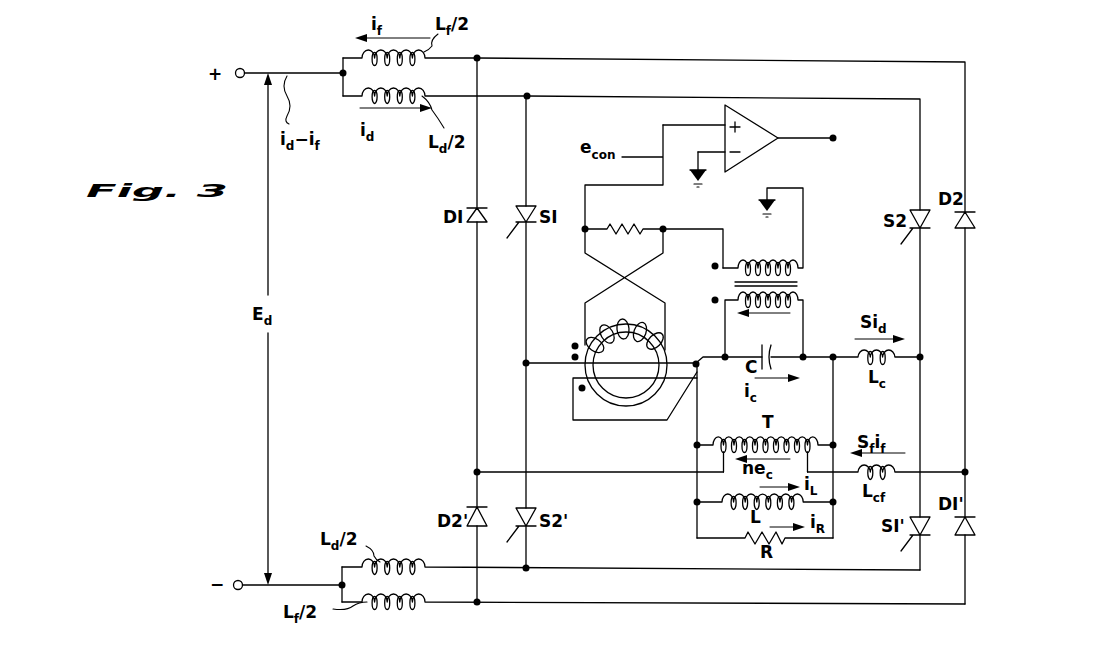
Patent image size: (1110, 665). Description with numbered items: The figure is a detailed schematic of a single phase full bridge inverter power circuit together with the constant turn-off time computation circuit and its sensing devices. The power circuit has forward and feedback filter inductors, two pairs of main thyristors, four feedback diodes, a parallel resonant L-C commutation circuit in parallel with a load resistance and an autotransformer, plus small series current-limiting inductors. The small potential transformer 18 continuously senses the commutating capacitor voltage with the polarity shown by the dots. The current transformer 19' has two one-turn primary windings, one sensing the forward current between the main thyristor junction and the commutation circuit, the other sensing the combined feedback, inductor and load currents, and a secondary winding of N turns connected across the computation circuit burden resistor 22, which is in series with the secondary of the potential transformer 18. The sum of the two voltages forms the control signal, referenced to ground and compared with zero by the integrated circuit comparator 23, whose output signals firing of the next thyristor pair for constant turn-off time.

The potential transformer 18 is at (774, 262).
The current transformer 19' is at (606, 353).
The computation circuit burden resistor 22 is at (628, 237).
The integrated circuit comparator 23 is at (760, 127).